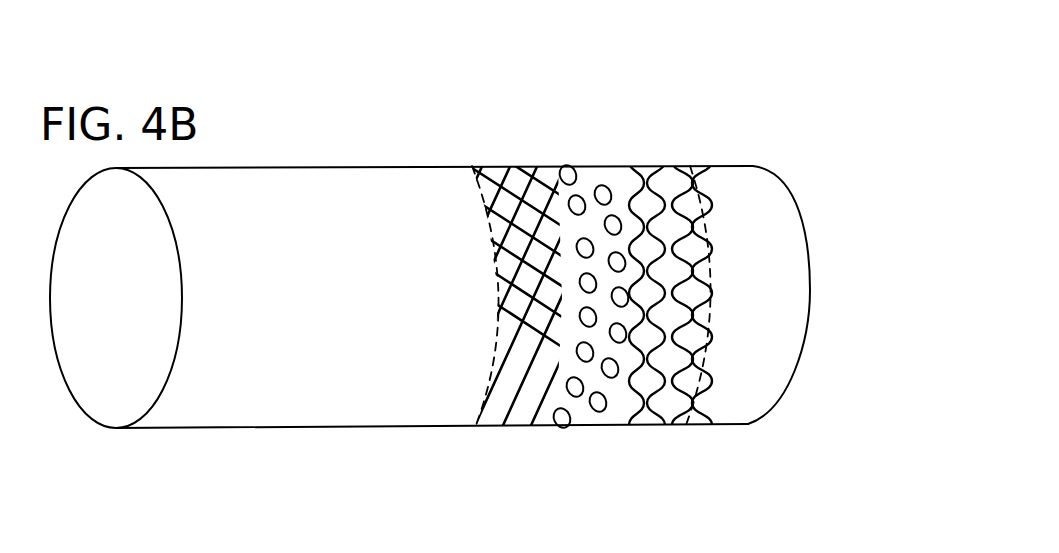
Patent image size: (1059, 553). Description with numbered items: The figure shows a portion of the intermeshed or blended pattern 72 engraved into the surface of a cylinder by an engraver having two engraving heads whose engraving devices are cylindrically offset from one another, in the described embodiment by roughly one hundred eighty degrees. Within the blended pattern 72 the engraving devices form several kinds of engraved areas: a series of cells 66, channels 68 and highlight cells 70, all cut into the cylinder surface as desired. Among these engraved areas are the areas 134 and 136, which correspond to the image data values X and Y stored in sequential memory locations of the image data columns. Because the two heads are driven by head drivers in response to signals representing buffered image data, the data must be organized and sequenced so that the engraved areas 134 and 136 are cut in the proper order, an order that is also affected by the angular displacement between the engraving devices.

The cells 66 is at (555, 287).
The channels 68 is at (659, 278).
The highlight cells 70 is at (572, 393).
The blended pattern 72 is at (470, 166).
The engraved area 134 is at (672, 312).
The engraved area 136 is at (688, 334).